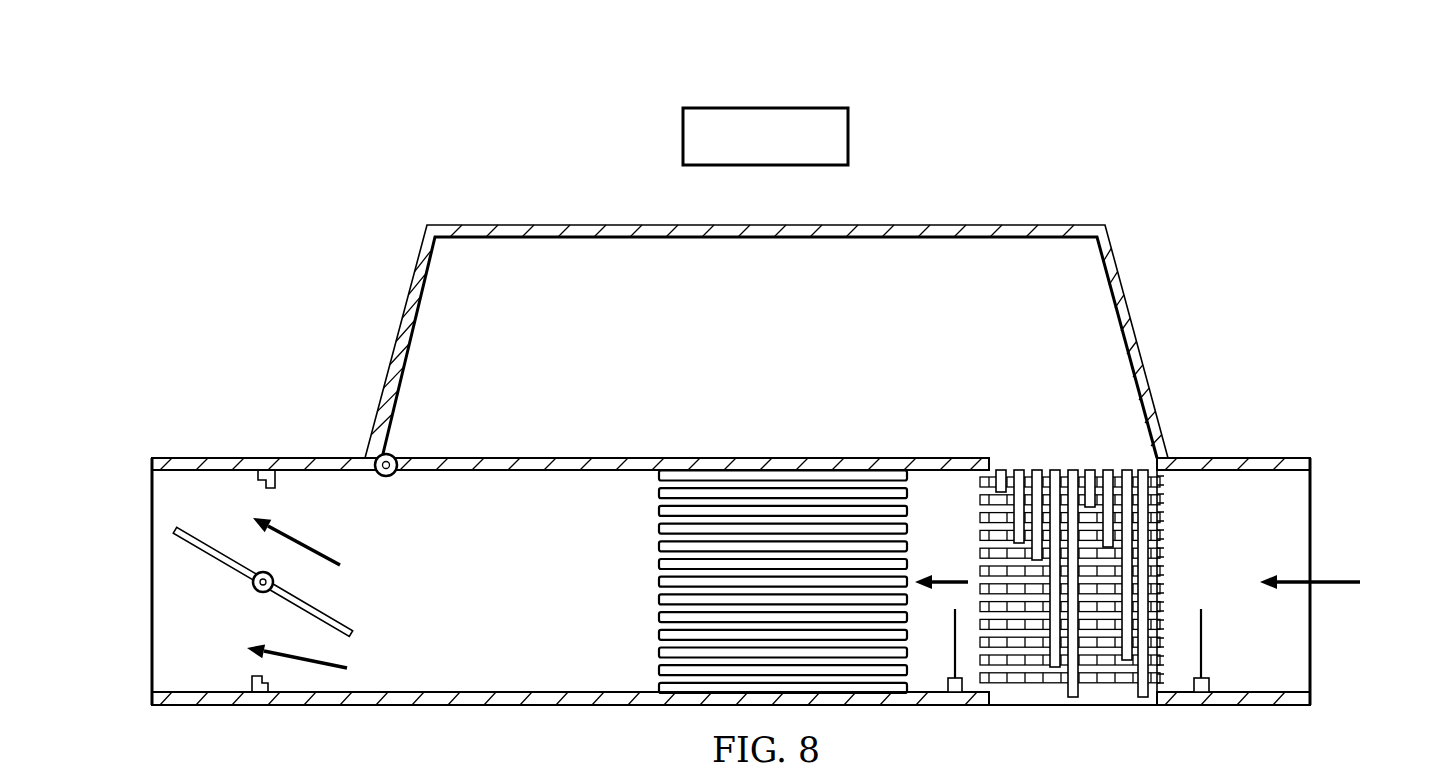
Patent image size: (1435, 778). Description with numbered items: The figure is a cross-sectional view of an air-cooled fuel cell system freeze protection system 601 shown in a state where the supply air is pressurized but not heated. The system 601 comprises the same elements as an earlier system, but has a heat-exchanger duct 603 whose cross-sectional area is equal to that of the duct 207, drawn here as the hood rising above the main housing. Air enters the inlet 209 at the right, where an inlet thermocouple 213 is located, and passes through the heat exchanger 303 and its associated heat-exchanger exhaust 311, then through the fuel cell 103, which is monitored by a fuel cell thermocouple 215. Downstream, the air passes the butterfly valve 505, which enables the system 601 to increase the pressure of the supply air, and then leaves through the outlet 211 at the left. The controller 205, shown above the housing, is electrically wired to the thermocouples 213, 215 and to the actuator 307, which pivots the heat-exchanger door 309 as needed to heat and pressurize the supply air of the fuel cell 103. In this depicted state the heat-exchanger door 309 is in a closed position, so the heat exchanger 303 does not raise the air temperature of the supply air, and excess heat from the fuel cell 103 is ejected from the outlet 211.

The air-cooled fuel cell system freeze protection system 601 is at (281, 121).
The controller 205 is at (683, 136).
The heat-exchanger duct 603 is at (513, 230).
The heat-exchanger door 309 is at (522, 464).
The actuator 307 is at (383, 478).
The outlet 211 is at (125, 514).
The butterfly valve 505 is at (216, 592).
The fuel cell 103 is at (658, 565).
The fuel cell thermocouple 215 is at (930, 700).
The heat-exchanger exhaust 311 is at (1092, 700).
The heat exchanger 303 is at (1160, 528).
The duct 207 is at (1237, 465).
The inlet thermocouple 213 is at (1210, 685).
The inlet 209 is at (1348, 657).